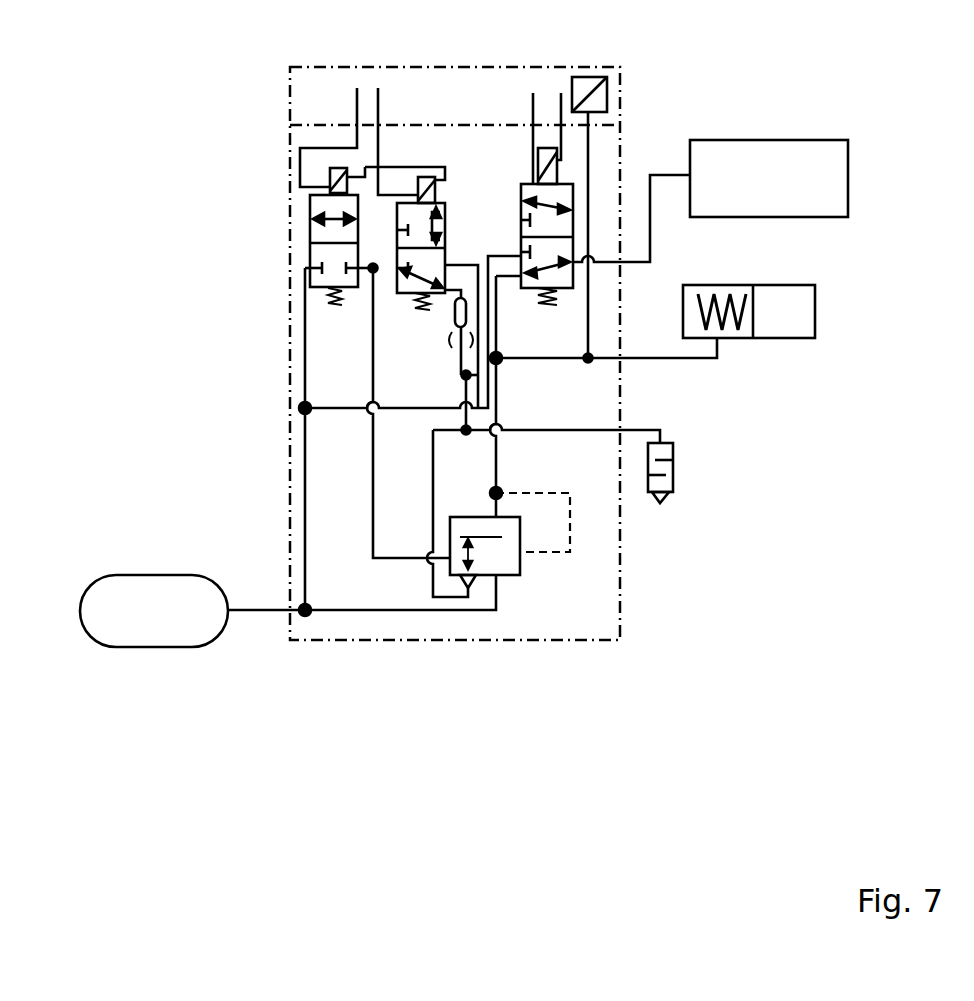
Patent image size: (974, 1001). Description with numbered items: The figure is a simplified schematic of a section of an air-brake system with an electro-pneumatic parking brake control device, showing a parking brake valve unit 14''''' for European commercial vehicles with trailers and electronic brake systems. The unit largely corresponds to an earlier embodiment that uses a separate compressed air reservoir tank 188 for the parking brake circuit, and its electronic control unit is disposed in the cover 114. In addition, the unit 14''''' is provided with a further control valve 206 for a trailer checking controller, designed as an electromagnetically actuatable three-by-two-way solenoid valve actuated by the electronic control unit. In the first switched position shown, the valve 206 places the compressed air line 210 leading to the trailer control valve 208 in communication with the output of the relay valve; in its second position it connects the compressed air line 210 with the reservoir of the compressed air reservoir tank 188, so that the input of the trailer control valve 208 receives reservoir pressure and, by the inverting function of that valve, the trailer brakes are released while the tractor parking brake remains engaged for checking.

The parking brake valve unit 14''''' is at (521, 317).
The cover 114 is at (455, 67).
The compressed air reservoir tank 188 is at (194, 578).
The control valve 206 is at (534, 180).
The trailer control valve 208 is at (775, 140).
The compressed air line 210 is at (652, 258).